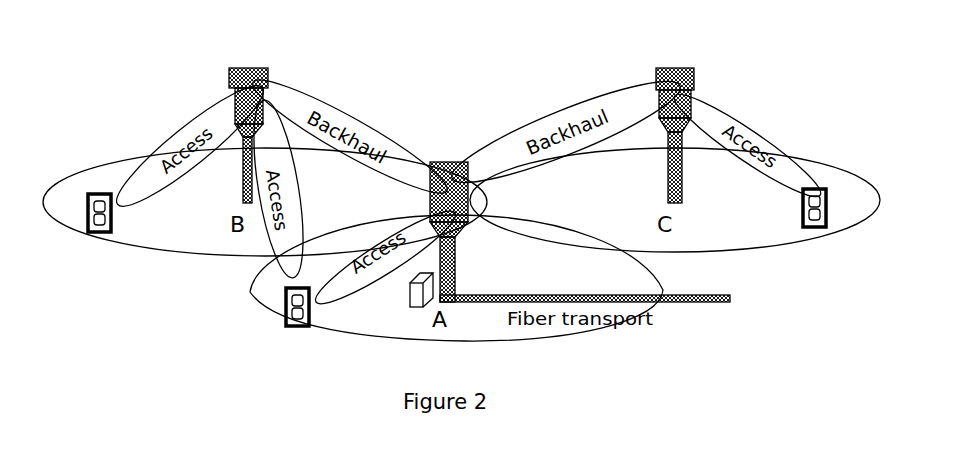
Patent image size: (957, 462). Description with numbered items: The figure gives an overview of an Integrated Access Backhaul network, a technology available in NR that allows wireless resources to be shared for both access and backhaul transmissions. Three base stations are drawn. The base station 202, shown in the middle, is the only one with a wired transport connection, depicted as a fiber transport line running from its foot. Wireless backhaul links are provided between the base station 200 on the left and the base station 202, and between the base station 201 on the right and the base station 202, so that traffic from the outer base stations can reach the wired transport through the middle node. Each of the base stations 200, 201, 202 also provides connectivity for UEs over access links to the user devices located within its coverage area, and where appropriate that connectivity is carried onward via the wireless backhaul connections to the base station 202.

The base station 200 is at (253, 68).
The base station 201 is at (677, 67).
The base station 202 is at (450, 162).